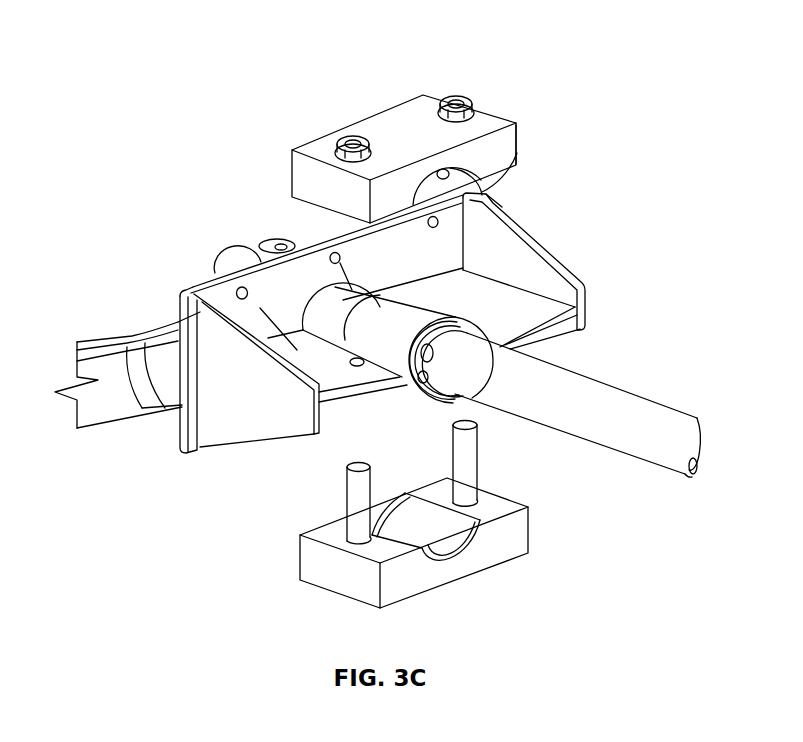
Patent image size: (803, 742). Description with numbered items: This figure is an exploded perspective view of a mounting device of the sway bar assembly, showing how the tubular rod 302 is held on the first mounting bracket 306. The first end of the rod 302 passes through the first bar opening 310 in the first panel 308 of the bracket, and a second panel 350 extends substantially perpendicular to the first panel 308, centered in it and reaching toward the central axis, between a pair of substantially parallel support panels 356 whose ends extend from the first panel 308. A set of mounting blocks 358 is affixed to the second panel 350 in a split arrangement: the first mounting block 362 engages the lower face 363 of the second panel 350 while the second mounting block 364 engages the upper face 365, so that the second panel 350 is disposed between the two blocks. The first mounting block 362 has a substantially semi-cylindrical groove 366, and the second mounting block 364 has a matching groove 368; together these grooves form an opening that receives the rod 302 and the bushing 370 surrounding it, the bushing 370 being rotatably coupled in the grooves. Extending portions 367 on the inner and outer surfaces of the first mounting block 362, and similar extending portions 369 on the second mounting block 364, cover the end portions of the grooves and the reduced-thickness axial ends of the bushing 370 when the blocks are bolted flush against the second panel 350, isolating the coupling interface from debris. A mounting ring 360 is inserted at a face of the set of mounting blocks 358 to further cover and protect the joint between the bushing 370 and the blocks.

The tubular rod 302 is at (627, 430).
The first mounting bracket 306 is at (212, 283).
The first panel 308 is at (256, 251).
The first bar opening 310 is at (330, 252).
The second panel 350 is at (543, 308).
The support panels 356 is at (245, 440).
The set of mounting blocks 358 is at (447, 518).
The mounting ring 360 is at (407, 393).
The first mounting block 362 is at (475, 552).
The lower face 363 is at (343, 408).
The second mounting block 364 is at (397, 117).
The upper face 365 is at (197, 284).
The groove 366 is at (432, 525).
The extending portions 367 is at (383, 532).
The groove 368 is at (450, 167).
The extending portions 369 is at (517, 153).
The bushing 370 is at (413, 313).